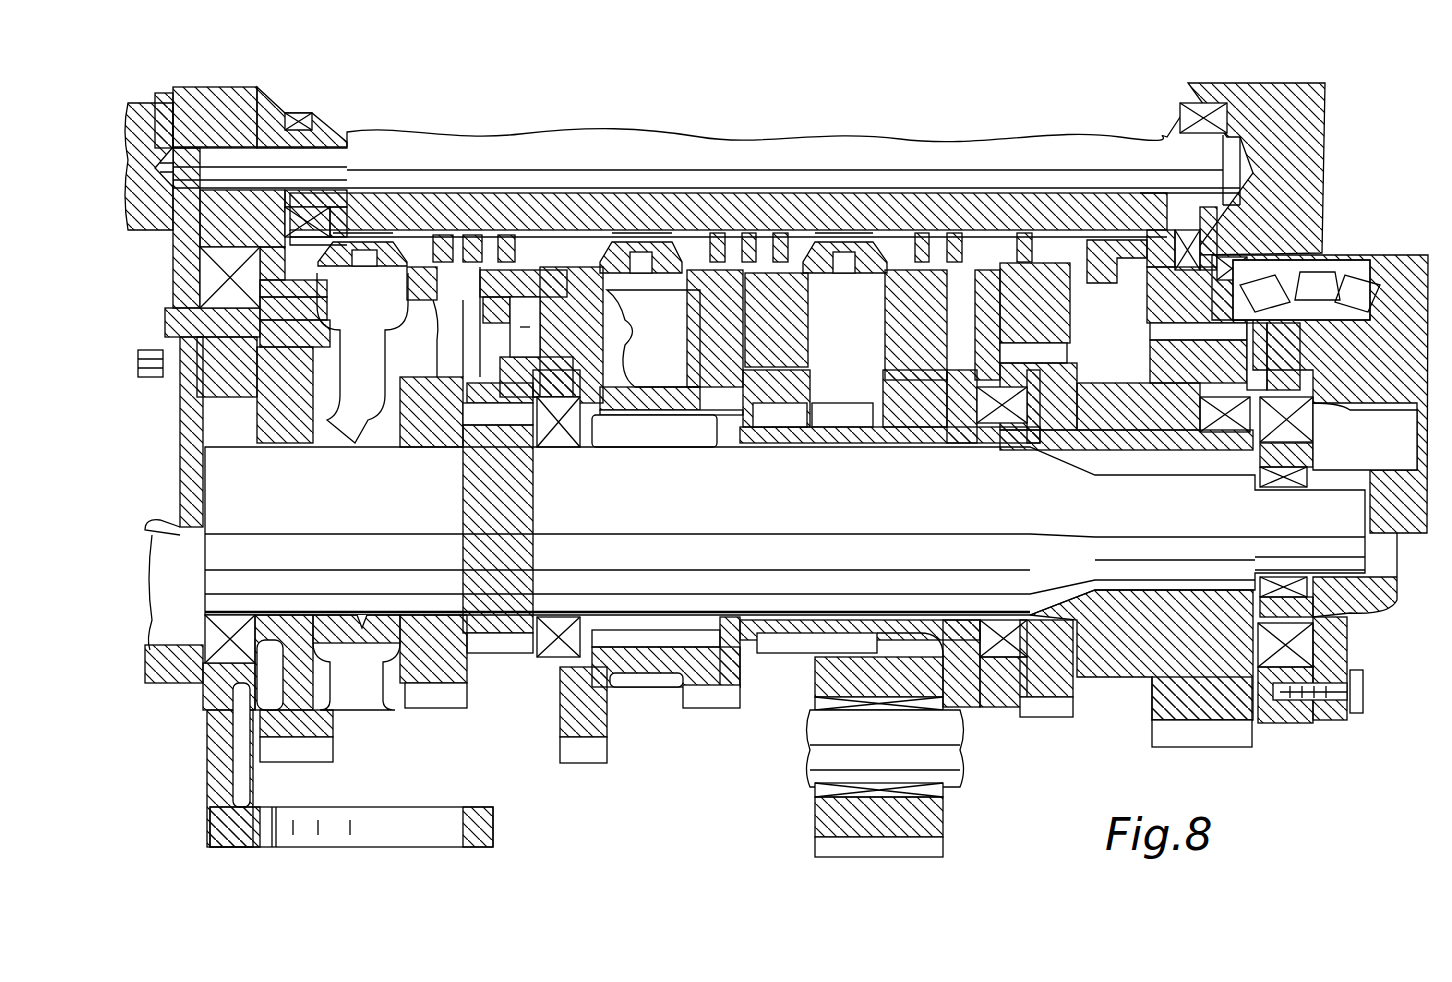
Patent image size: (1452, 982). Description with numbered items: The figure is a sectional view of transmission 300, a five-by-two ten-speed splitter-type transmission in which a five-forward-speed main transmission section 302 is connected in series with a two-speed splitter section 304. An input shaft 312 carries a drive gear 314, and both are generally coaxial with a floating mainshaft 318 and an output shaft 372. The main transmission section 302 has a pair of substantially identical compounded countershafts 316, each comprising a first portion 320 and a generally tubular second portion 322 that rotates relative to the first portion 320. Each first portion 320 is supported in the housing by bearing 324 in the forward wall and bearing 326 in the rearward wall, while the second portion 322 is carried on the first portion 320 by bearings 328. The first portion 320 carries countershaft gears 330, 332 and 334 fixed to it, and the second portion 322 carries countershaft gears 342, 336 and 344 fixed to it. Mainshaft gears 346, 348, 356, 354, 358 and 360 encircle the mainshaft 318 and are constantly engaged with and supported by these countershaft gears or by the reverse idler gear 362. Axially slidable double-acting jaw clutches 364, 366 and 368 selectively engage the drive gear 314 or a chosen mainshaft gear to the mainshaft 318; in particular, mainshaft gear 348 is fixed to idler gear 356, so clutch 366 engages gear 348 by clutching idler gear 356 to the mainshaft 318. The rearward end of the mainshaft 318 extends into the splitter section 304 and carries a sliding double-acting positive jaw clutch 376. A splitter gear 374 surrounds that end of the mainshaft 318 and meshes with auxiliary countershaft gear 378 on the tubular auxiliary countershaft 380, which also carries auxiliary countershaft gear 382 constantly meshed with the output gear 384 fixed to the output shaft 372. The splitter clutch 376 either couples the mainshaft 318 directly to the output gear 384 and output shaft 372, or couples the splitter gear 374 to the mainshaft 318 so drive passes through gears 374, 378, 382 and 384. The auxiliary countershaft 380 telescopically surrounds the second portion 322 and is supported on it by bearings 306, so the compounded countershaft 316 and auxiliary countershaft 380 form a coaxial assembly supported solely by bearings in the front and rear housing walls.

The transmission 300 is at (1372, 112).
The main transmission section 302 is at (415, 858).
The splitter section 304 is at (1350, 750).
The bearings 306 is at (1003, 417).
The input shaft 312 is at (172, 141).
The drive gear 314 is at (313, 305).
The compounded countershafts 316 is at (528, 690).
The mainshaft 318 is at (537, 160).
The first portion 320 is at (622, 526).
The second portion 322 is at (652, 402).
The bearing 324 is at (200, 673).
The bearing 326 is at (1293, 437).
The bearings 328 is at (566, 423).
The countershaft gear 330 is at (315, 742).
The countershaft gear 332 is at (433, 693).
The countershaft gear 334 is at (500, 653).
The countershaft gear 336 is at (703, 708).
The countershaft gear 342 is at (592, 748).
The countershaft gear 344 is at (780, 653).
The mainshaft gear 346 is at (385, 360).
The mainshaft gear 348 is at (430, 440).
The mainshaft gear 354 is at (703, 333).
The idler gear 356 is at (637, 293).
The mainshaft gear 358 is at (798, 380).
The mainshaft gear 360 is at (908, 328).
The reverse idler gear 362 is at (933, 845).
The jaw clutch 364 is at (392, 248).
The jaw clutch 366 is at (620, 253).
The jaw clutch 368 is at (832, 253).
The output shaft 372 is at (1302, 123).
The splitter gear 374 is at (1070, 322).
The splitter clutch 376 is at (1098, 262).
The auxiliary section countershaft gear 378 is at (1045, 717).
The auxiliary countershaft 380 is at (1147, 442).
The auxiliary section countershaft gear 382 is at (1197, 747).
The output gear 384 is at (1177, 298).